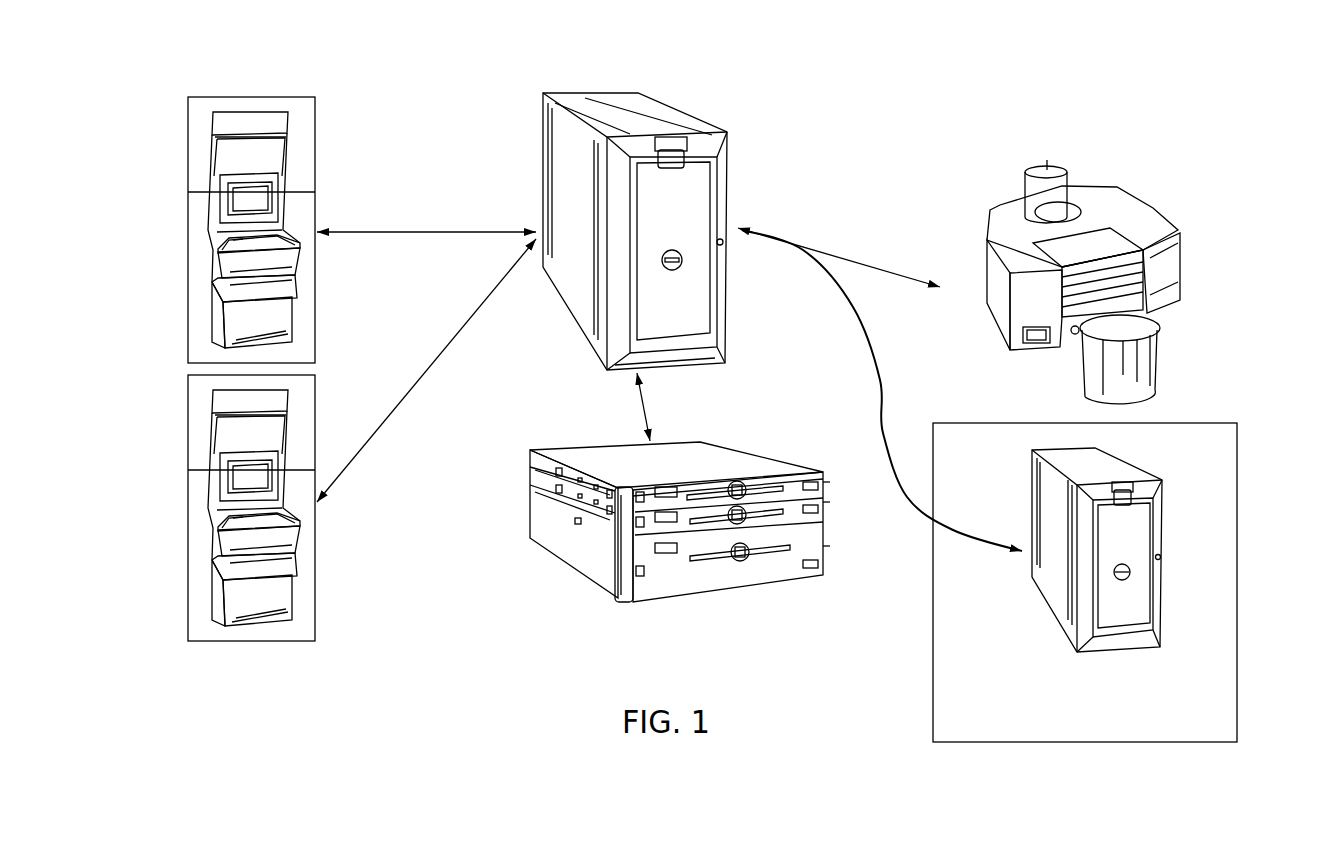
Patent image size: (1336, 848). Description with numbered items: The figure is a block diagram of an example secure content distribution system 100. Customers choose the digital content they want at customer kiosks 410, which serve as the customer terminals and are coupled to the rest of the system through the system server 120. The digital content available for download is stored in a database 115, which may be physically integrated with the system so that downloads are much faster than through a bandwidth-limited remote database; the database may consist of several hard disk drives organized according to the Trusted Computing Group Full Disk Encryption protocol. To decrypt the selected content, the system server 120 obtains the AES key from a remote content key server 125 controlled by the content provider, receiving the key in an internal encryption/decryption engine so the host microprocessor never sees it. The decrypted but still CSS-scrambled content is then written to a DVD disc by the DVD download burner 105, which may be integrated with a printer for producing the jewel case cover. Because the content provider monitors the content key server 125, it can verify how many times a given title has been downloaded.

The content distribution system 100 is at (852, 72).
The customer kiosk 410 is at (315, 152).
The system server 120 is at (727, 168).
The database 115 is at (758, 463).
The DVD download writer (burner) 105 is at (1183, 260).
The remote content key server 125 is at (1237, 565).